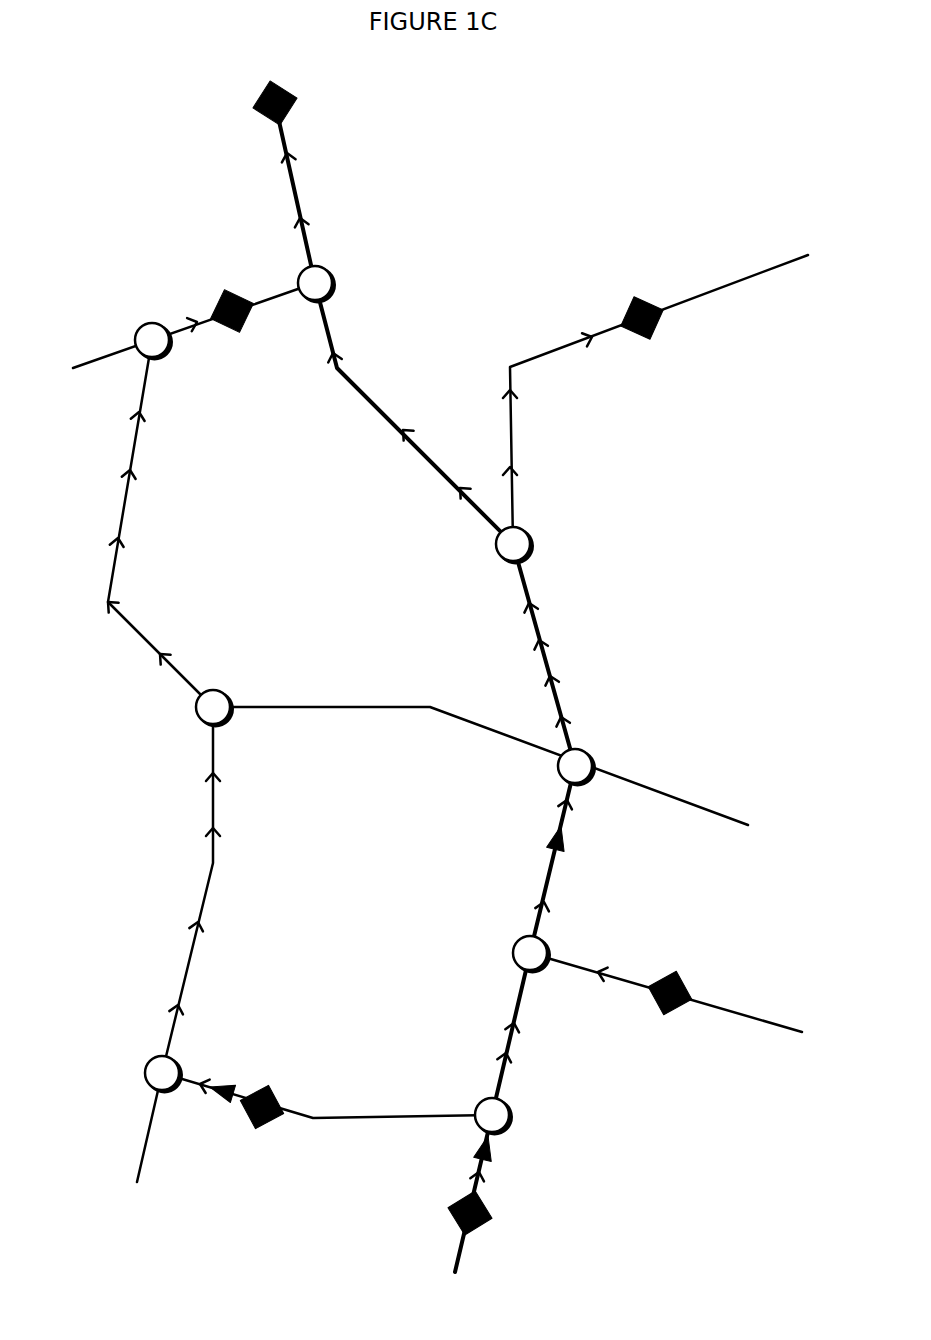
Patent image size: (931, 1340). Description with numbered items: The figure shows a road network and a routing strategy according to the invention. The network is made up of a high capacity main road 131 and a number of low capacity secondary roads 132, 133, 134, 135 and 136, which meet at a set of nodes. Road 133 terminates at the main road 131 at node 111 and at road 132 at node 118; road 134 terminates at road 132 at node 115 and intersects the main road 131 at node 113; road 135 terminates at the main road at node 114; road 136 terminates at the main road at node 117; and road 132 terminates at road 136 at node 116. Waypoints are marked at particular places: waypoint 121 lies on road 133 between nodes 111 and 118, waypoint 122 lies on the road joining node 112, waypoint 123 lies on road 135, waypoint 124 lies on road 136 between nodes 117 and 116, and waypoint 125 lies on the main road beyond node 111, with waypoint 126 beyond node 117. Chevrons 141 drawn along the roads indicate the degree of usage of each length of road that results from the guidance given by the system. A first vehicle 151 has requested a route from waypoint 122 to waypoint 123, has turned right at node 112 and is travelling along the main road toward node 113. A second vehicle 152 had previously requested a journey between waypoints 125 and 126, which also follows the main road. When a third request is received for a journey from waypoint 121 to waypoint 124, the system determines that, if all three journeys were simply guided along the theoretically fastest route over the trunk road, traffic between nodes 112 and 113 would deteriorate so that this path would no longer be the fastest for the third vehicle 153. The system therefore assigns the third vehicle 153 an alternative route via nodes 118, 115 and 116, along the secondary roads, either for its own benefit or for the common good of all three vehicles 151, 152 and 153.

The node 111 is at (513, 1117).
The node 112 is at (547, 970).
The node 113 is at (592, 782).
The node 114 is at (535, 540).
The node 115 is at (233, 713).
The node 116 is at (173, 347).
The node 117 is at (337, 290).
The node 118 is at (142, 1073).
The waypoint 121 is at (277, 1117).
The waypoint 122 is at (687, 1007).
The waypoint 123 is at (658, 328).
The waypoint 124 is at (220, 293).
The waypoint 125 is at (492, 1212).
The waypoint 126 is at (265, 92).
The road 131 is at (462, 1243).
The road 132 is at (142, 1167).
The road 133 is at (385, 1118).
The road 134 is at (402, 705).
The road 135 is at (558, 347).
The road 136 is at (98, 350).
The chevrons 141 is at (595, 963).
The first vehicle 151 is at (550, 830).
The second vehicle 152 is at (472, 1142).
The third vehicle 153 is at (220, 1095).